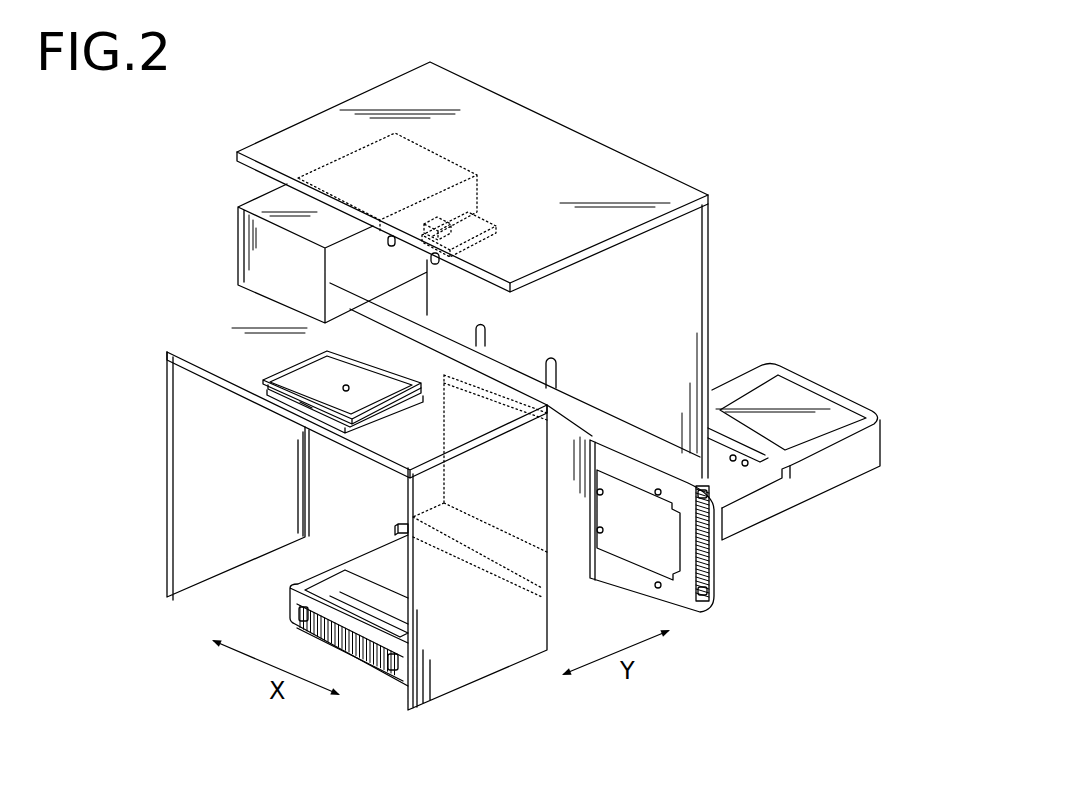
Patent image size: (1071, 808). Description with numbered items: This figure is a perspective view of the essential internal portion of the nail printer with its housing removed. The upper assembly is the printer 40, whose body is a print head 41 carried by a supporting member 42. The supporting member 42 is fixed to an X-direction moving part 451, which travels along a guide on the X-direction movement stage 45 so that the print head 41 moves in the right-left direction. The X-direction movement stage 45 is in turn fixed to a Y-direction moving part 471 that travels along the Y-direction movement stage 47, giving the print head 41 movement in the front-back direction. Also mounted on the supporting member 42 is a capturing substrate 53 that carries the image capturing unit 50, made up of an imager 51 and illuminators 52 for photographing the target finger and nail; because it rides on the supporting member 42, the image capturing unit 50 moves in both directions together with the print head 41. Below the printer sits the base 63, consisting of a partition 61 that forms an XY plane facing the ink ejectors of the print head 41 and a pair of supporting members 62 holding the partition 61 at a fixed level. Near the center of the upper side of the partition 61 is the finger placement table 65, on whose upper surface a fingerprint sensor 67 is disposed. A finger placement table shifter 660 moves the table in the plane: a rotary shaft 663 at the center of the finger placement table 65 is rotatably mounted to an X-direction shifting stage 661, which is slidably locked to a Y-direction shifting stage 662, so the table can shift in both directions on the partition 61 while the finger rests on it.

The printer 40 is at (717, 277).
The print head 41 is at (227, 218).
The supporting member 42 is at (632, 168).
The X-direction movement stage 45 is at (677, 607).
The X-direction moving part 451 is at (510, 363).
The Y-direction movement stage 47 is at (832, 483).
The Y-direction moving part 471 is at (698, 547).
The image capturing unit 50 is at (412, 210).
The imager 51 is at (439, 228).
The illuminators 52 is at (434, 259).
The capturing substrate 53 is at (480, 217).
The partition 61 is at (200, 378).
The supporting member 62 is at (177, 542).
The base 63 is at (332, 489).
The finger placement table 65 is at (308, 412).
The fingerprint sensor 67 is at (386, 380).
The finger placement table shifter 660 is at (292, 399).
The X-direction shifting stage 661 is at (285, 398).
The Y-direction shifting stage 662 is at (395, 407).
The rotary shaft 663 is at (348, 391).